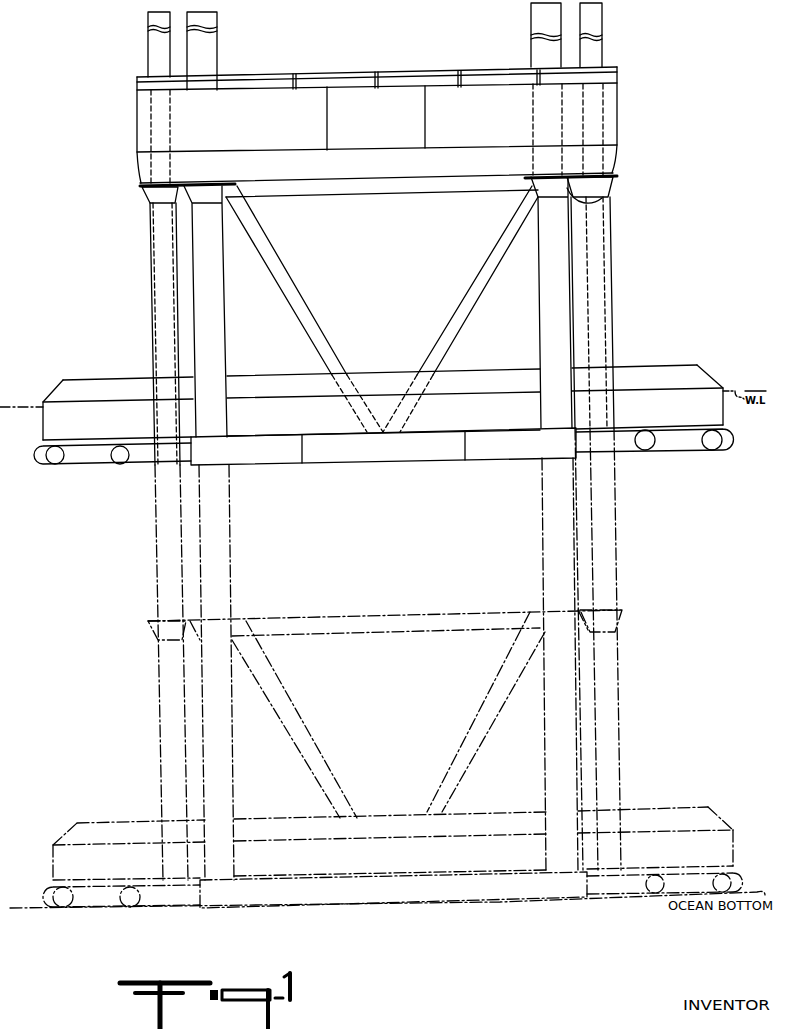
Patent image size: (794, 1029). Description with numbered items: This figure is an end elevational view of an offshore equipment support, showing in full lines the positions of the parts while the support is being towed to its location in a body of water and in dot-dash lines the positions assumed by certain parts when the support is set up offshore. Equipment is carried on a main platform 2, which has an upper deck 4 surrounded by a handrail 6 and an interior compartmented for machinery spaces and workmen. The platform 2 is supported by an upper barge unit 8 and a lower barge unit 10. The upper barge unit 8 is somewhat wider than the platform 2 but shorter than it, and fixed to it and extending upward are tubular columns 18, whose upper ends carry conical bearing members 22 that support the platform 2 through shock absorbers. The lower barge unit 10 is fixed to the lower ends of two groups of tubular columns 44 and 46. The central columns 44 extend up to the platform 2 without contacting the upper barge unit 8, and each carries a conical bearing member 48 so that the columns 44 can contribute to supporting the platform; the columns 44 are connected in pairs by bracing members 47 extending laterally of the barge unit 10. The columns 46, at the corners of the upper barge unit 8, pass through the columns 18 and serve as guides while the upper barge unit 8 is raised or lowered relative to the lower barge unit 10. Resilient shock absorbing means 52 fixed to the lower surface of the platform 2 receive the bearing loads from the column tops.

The main platform 2 is at (622, 122).
The upper deck 4 is at (617, 80).
The handrail 6 is at (612, 67).
The upper barge unit 8 is at (63, 382).
The lower barge unit 10 is at (498, 458).
The tubular columns 18 is at (153, 315).
The conical bearing members 22 is at (142, 200).
The tubular columns 44 is at (217, 32).
The tubular columns 46 is at (148, 49).
The bracing members 47 is at (257, 232).
The conical bearing member 48 is at (602, 199).
The resilient shock absorbing means 52 is at (142, 184).